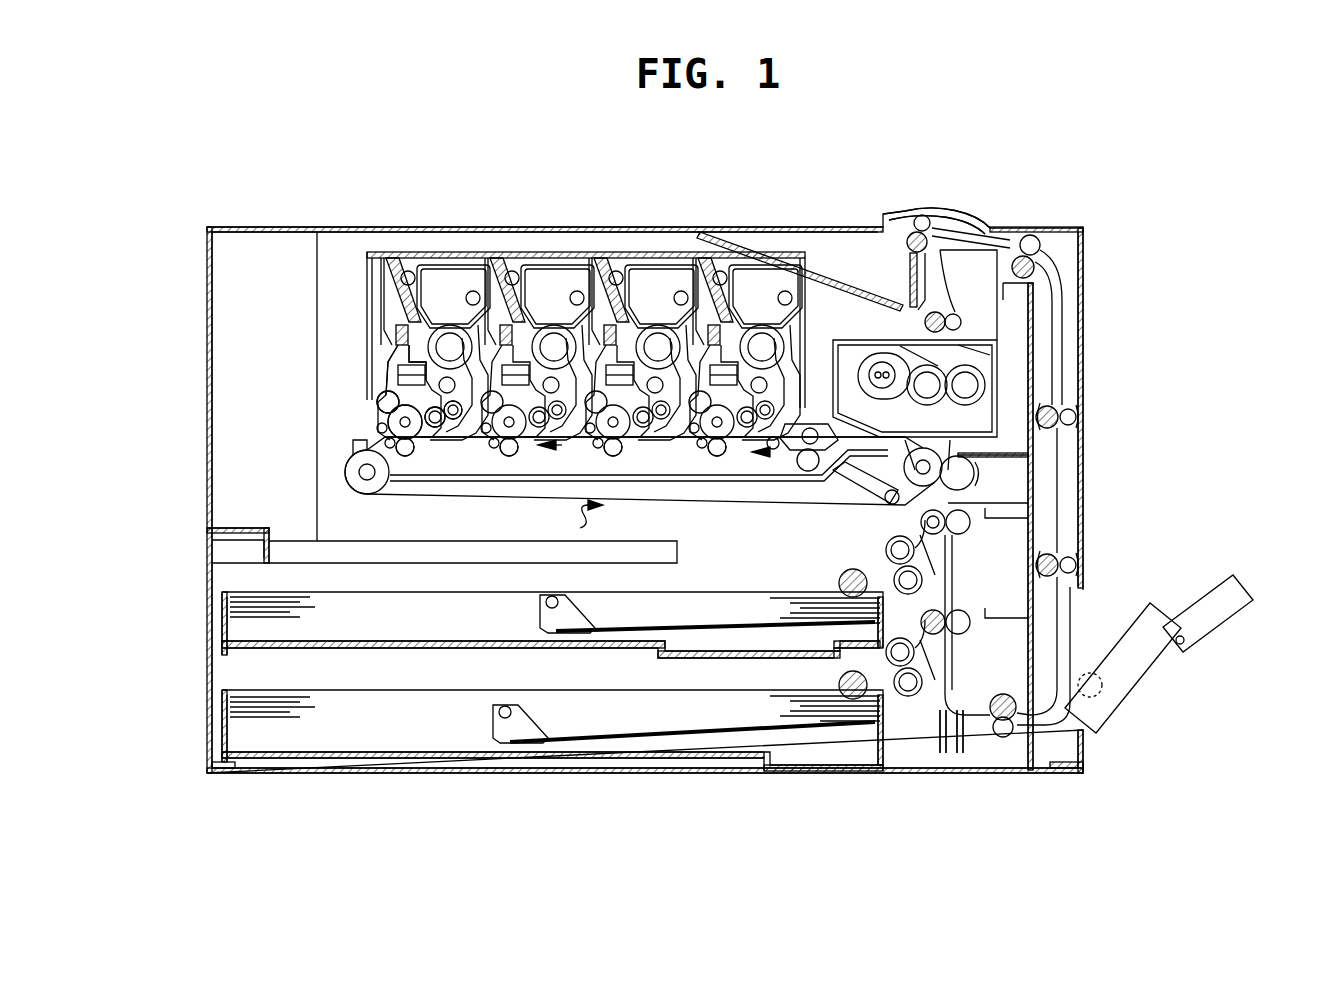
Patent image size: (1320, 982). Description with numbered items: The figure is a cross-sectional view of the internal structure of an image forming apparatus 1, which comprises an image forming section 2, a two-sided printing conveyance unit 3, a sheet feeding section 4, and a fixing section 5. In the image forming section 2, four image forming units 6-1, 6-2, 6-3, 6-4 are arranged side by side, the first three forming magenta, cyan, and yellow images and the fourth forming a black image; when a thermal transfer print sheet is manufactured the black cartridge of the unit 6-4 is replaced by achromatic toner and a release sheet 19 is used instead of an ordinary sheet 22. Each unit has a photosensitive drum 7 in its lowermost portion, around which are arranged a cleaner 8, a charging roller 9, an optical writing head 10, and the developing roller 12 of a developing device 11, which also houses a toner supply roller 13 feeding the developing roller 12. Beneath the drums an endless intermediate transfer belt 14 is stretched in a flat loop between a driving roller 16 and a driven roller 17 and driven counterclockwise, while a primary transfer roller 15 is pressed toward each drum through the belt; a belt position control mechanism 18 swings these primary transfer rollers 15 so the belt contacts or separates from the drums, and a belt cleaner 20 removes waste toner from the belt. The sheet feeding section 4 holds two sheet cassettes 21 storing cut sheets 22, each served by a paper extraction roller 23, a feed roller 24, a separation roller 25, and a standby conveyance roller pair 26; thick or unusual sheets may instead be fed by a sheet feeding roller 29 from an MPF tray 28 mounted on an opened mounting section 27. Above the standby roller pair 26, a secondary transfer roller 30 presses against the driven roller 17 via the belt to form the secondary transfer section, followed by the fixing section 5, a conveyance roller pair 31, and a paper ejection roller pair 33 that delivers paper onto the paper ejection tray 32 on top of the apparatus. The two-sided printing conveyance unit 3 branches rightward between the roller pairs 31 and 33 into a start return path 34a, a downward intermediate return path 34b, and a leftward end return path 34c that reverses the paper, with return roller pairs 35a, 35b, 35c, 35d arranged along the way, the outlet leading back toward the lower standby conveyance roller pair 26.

The image forming apparatus 1 is at (1125, 178).
The image forming section 2 is at (698, 172).
The two-sided printing conveyance unit 3 is at (1075, 472).
The sheet feeding section 4 is at (645, 778).
The fixing section 5 is at (985, 336).
The image forming unit 6-1 is at (690, 222).
The image forming unit 6-2 is at (683, 222).
The image forming unit 6-3 is at (485, 222).
The image forming unit 6-4 is at (380, 222).
The photosensitive drum 7 is at (430, 441).
The cleaner 8 is at (400, 421).
The charging roller 9 is at (383, 400).
The optical writing head 10 is at (396, 372).
The developing device 11 is at (420, 264).
The developing roller 12 is at (438, 428).
The toner supply roller 13 is at (457, 420).
The intermediate transfer belt 14 is at (575, 442).
The primary transfer roller 15 is at (405, 457).
The driving roller 16 is at (366, 480).
The driven roller 17 is at (912, 484).
The belt position control mechanism 18 is at (465, 483).
The release sheet 19 is at (951, 731).
The belt cleaner 20 is at (800, 424).
The sheet cassette 21 is at (438, 762).
The sheet 22 is at (870, 600).
The paper extraction roller 23 is at (842, 573).
The feed roller 24 is at (888, 545).
The separation roller 25 is at (908, 594).
The standby conveyance roller pair 26 is at (972, 528).
The mounting section 27 is at (1158, 672).
The MPF tray 28 is at (1148, 622).
The sheet feeding roller 29 is at (1090, 672).
The secondary transfer roller 30 is at (978, 480).
The conveyance roller pair 31 is at (950, 312).
The paper ejection tray 32 is at (842, 272).
The paper ejection roller pair 33 is at (908, 228).
The start return path 34a is at (966, 256).
The intermediate return path 34b is at (1062, 332).
The end return path 34c is at (1020, 735).
The return roller pair 35a is at (1040, 258).
The return roller pair 35b is at (1076, 409).
The return roller pair 35c is at (1076, 560).
The return roller pair 35d is at (1000, 742).